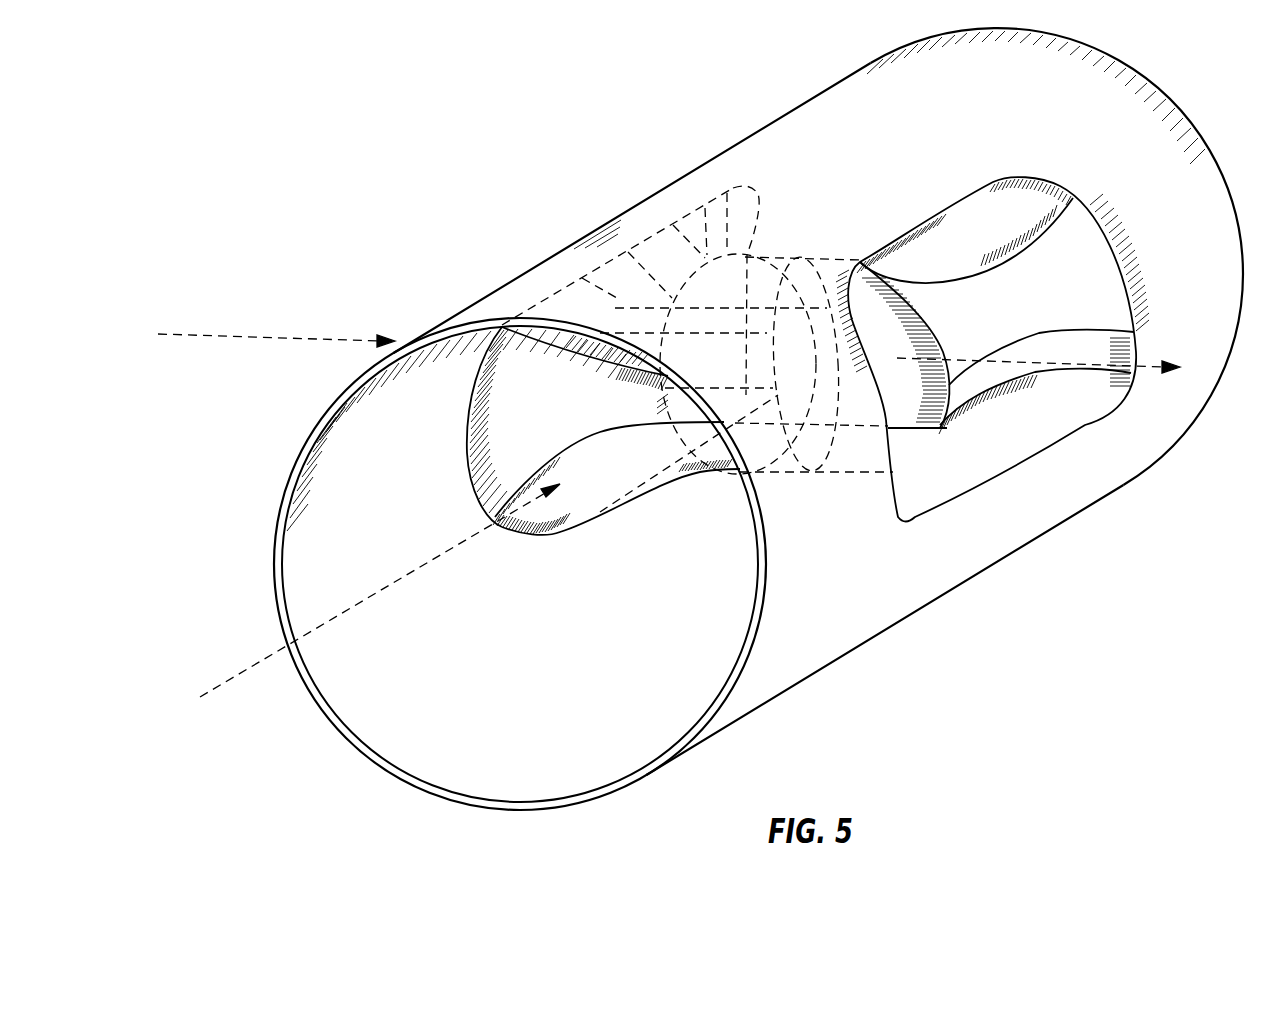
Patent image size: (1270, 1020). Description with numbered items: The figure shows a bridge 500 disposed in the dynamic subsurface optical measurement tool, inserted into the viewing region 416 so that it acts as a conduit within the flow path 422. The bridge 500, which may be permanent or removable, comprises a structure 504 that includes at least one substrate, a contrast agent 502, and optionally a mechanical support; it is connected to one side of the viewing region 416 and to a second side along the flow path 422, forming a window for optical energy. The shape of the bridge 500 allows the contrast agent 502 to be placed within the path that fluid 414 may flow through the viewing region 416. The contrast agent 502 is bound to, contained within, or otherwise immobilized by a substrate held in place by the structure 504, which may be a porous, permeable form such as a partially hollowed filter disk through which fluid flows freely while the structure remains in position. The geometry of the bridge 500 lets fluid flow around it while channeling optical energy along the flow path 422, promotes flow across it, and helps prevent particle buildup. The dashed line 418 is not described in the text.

The fluid 414 is at (409, 573).
The viewing region 416 is at (828, 620).
The transverse flow axis 418 is at (1143, 362).
The flow path 422 is at (1050, 362).
The bridge 500 is at (792, 229).
The contrast agent 502 is at (913, 350).
The structure 504 is at (817, 257).